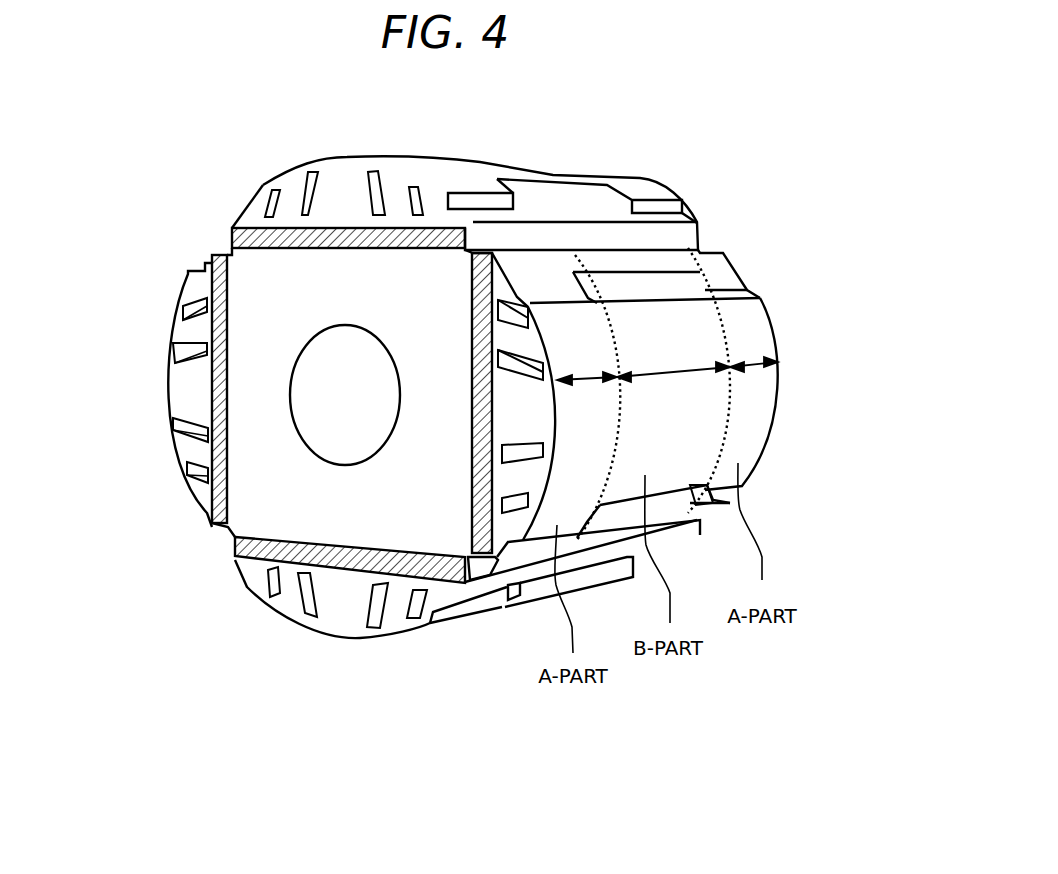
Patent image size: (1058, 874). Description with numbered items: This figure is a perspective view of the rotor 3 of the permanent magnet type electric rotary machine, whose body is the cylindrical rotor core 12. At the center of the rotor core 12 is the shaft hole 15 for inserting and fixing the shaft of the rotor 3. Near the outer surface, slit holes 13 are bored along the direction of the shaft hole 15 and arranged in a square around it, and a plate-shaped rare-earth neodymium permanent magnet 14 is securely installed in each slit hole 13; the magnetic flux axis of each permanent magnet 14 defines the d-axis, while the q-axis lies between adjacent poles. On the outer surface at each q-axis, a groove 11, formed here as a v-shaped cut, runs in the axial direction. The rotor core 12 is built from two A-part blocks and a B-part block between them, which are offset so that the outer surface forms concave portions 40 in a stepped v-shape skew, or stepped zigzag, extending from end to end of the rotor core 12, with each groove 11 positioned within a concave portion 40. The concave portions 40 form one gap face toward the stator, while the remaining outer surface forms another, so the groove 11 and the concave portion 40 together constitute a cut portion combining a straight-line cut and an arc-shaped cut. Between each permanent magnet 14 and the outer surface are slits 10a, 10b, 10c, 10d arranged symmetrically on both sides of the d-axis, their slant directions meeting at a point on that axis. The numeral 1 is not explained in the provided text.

The lower flange portion 1 is at (483, 570).
The rotor 3 is at (772, 327).
The slit 10a is at (190, 468).
The slit 10b is at (203, 300).
The slit 10c is at (173, 425).
The slit 10d is at (175, 355).
The groove 11 is at (212, 255).
The rotor core 12 is at (168, 315).
The slit hole 13 is at (393, 250).
The permanent magnet 14 is at (232, 224).
The shaft hole 15 is at (360, 457).
The concave portion 40 is at (245, 222).